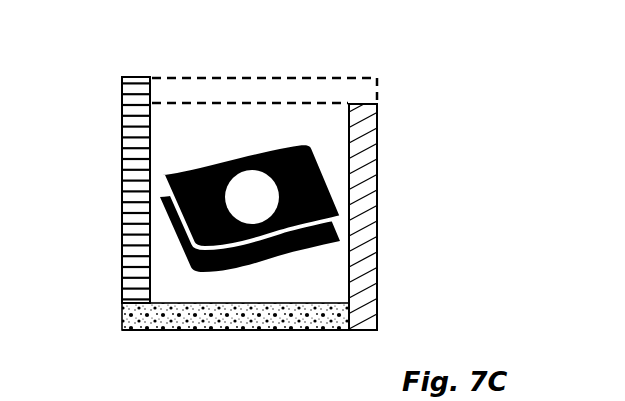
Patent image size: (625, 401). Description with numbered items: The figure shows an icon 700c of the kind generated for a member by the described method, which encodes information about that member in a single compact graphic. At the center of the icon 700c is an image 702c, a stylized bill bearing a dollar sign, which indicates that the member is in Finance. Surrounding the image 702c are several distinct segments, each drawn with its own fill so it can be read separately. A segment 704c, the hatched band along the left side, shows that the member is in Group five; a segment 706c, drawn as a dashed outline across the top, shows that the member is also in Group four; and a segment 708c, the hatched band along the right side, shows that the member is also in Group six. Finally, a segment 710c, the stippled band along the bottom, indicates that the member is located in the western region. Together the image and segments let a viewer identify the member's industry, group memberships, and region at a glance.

The icon 700c is at (300, 206).
The image 702c is at (215, 158).
The segment 704c is at (130, 206).
The segment 706c is at (247, 88).
The segment 708c is at (377, 203).
The segment 710c is at (255, 318).